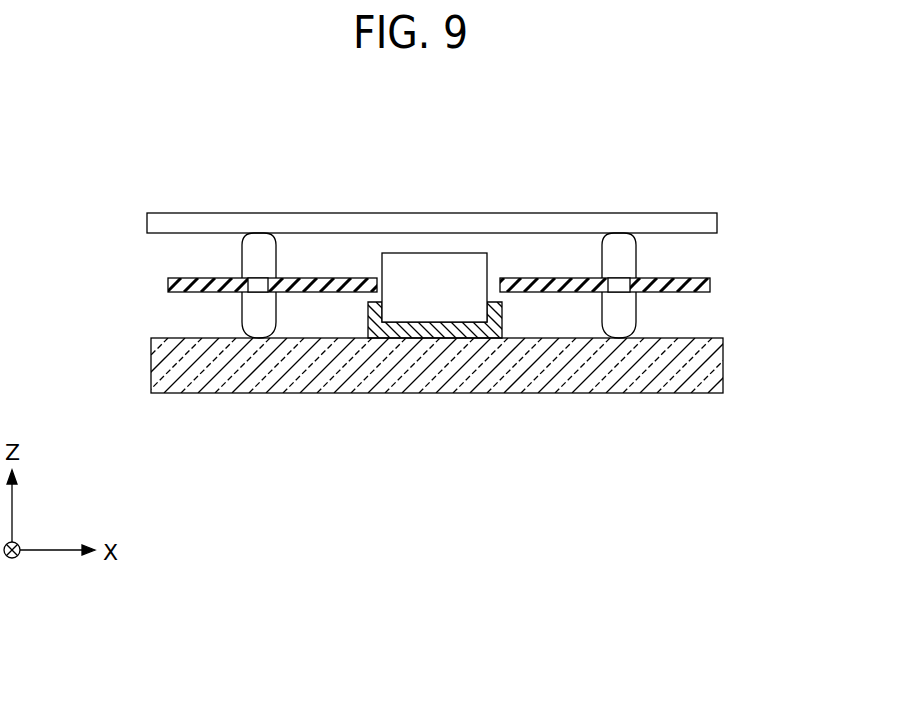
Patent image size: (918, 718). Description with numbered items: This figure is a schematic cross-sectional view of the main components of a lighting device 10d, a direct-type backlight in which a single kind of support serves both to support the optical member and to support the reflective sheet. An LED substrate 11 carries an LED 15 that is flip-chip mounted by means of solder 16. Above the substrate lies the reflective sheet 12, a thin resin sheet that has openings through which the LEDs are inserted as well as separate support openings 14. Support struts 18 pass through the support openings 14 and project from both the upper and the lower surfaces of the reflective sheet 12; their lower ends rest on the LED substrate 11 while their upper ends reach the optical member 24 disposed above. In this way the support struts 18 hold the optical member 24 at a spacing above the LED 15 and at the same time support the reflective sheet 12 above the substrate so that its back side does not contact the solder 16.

The lighting device 10d is at (707, 122).
The LED substrate 11 is at (151, 365).
The reflective sheet 12 is at (347, 270).
The support openings 14 is at (638, 278).
The LED 15 is at (432, 252).
The solder 16 is at (432, 338).
The support struts 18 is at (255, 252).
The optical member 24 is at (145, 233).